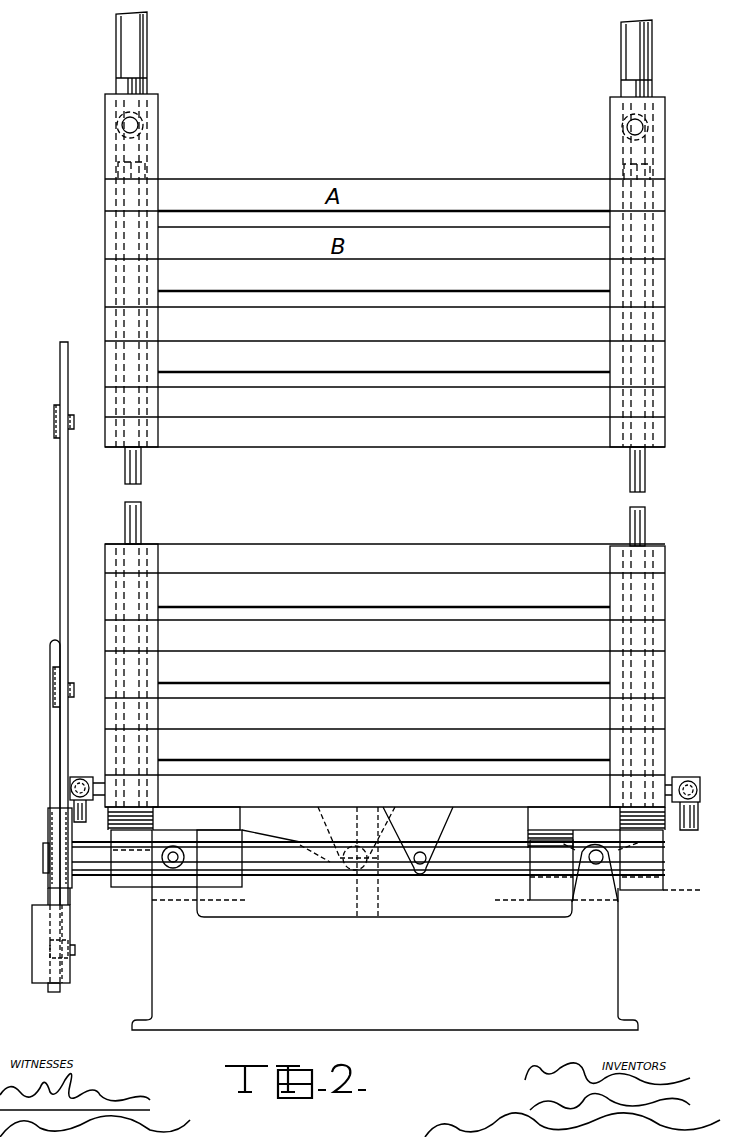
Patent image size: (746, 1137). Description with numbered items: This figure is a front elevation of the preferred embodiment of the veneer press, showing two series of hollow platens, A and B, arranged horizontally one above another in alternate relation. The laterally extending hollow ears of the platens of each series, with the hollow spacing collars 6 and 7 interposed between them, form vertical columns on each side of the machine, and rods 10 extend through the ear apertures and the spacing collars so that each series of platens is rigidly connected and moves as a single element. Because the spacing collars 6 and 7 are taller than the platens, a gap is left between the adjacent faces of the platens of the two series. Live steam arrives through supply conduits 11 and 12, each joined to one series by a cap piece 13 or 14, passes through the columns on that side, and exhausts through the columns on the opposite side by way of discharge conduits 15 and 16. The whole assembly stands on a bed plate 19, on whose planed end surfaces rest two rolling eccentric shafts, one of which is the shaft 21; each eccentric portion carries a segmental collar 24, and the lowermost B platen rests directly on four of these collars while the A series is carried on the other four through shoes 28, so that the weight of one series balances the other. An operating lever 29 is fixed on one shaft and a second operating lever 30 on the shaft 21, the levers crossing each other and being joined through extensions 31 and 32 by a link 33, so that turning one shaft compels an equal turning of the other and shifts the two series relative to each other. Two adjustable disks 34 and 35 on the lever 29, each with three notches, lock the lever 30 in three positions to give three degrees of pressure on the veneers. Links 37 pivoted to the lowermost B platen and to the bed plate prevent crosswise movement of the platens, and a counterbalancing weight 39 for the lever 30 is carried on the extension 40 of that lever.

The hollow spacing collar 6 is at (664, 334).
The hollow spacing collar 7 is at (110, 283).
The rod 10 is at (142, 480).
The live steam supply conduit 11 is at (116, 60).
The live steam supply conduit 12 is at (622, 62).
The cap piece 13 is at (117, 126).
The cap piece 14 is at (611, 131).
The discharge conduit 15 is at (688, 778).
The discharge conduit 16 is at (80, 778).
The bed plate 19 is at (385, 958).
The shaft 21 is at (43, 858).
The segmental collar 24 is at (132, 887).
The shoe 28 is at (386, 827).
The operating lever 29 is at (62, 516).
The operating lever 30 is at (51, 656).
The extension 31 is at (68, 897).
The extension 32 is at (66, 934).
The link 33 is at (75, 950).
The adjustable disk 34 is at (57, 686).
The adjustable disk 35 is at (56, 412).
The link 37 is at (470, 862).
The counterbalancing weight 39 is at (33, 934).
The extension 40 is at (54, 992).